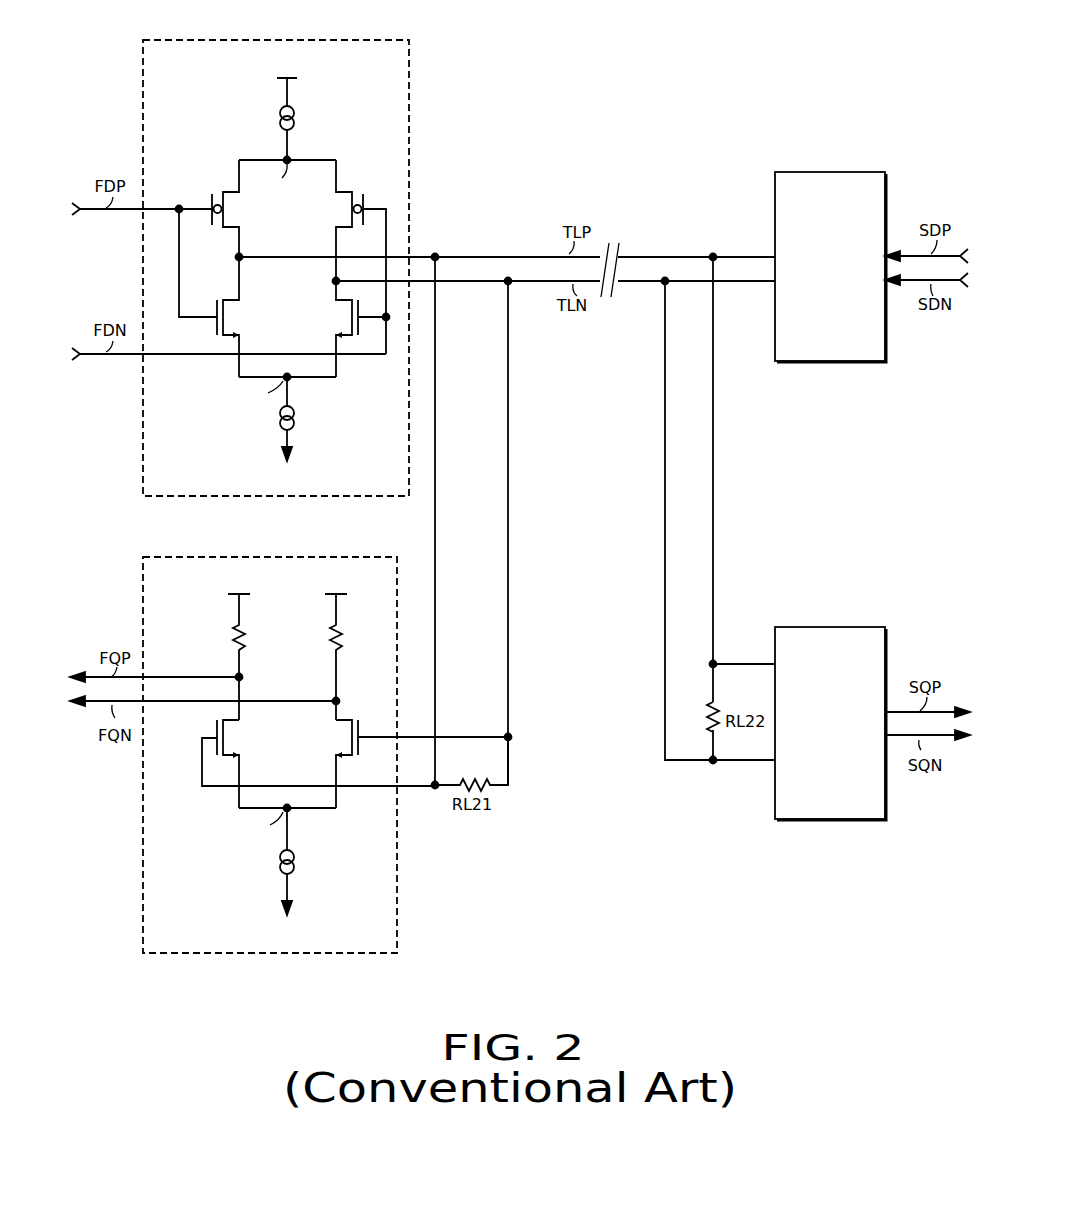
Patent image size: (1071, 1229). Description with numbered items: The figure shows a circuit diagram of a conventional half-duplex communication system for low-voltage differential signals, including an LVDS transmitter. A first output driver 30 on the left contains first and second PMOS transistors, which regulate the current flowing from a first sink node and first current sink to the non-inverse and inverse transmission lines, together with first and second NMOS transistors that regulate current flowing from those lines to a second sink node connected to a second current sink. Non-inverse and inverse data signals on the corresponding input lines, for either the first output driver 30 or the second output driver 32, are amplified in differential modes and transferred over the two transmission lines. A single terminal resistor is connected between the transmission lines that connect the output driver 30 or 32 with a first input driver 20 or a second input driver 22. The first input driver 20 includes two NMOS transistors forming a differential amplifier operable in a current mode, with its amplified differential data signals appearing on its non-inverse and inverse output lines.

The output driver 30 is at (288, 40).
The input driver 20 is at (289, 557).
The output driver 32 is at (826, 172).
The input driver 22 is at (828, 627).